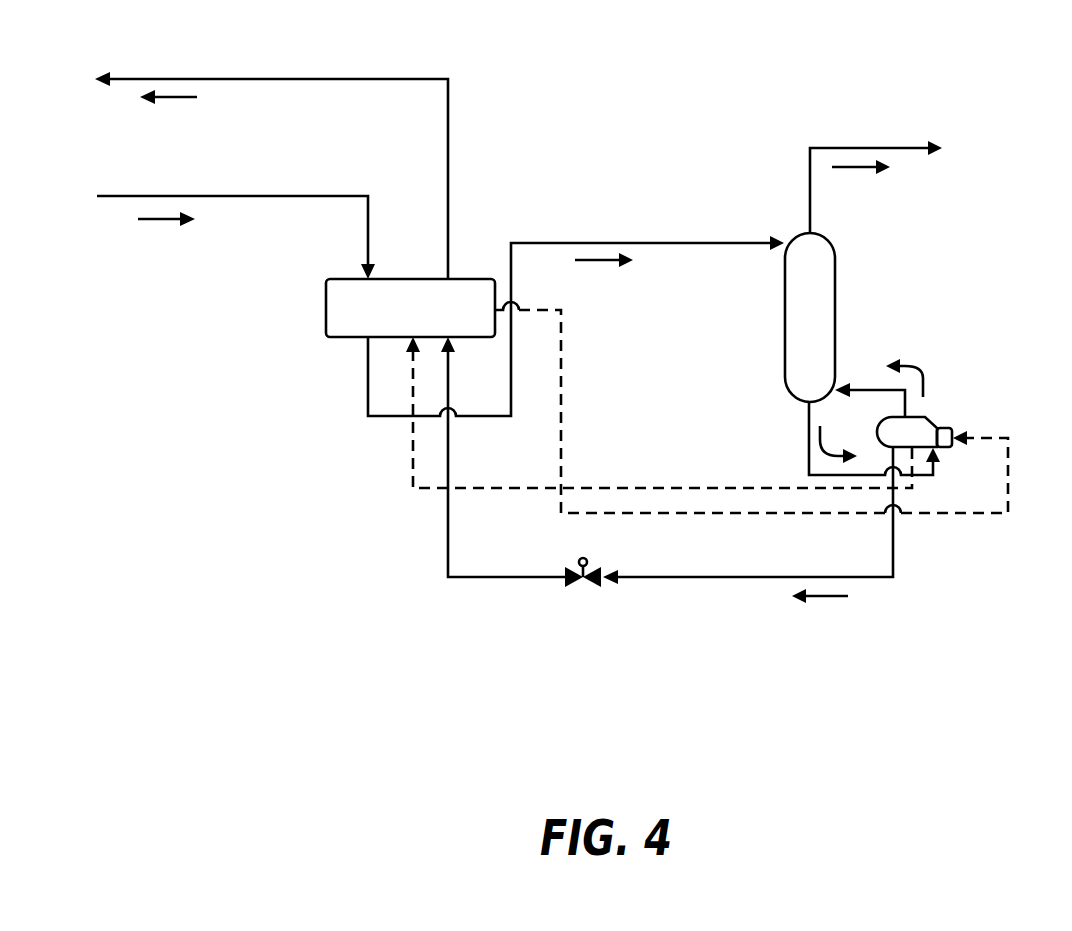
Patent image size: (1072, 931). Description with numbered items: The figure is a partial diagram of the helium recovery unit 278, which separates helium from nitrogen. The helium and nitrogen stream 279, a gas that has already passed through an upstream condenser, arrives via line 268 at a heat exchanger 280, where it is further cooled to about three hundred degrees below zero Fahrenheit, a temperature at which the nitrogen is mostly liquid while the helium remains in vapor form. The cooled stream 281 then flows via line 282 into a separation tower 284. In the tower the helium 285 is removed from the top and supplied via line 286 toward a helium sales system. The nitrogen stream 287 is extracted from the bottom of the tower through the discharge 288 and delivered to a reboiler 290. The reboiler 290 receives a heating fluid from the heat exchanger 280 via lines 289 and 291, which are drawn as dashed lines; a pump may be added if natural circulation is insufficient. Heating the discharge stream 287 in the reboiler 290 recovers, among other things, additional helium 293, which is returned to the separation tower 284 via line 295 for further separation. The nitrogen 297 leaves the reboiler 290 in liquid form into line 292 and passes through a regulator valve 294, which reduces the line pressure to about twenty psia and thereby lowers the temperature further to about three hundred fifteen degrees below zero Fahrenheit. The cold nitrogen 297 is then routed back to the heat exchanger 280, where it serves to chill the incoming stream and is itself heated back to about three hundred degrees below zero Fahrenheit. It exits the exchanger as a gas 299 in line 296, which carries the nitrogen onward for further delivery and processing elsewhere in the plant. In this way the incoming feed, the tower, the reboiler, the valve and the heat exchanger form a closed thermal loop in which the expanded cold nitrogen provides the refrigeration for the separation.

The helium recovery unit 278 is at (322, 545).
The line 268 is at (232, 196).
The helium and nitrogen stream 279 is at (164, 220).
The heat exchanger 280 is at (326, 306).
The stream 281 is at (606, 262).
The line 282 is at (584, 243).
The separation tower 284 is at (836, 296).
The helium 285 is at (866, 170).
The line 286 is at (862, 148).
The nitrogen stream 287 is at (825, 449).
The discharge 288 is at (808, 442).
The line 289 is at (955, 517).
The reboiler 290 is at (935, 417).
The line 291 is at (657, 487).
The line 292 is at (716, 580).
The additional helium 293 is at (924, 372).
The regulator valve 294 is at (575, 590).
The line 295 is at (865, 386).
The line 296 is at (271, 79).
The nitrogen 297 is at (818, 600).
The gas 299 is at (177, 98).